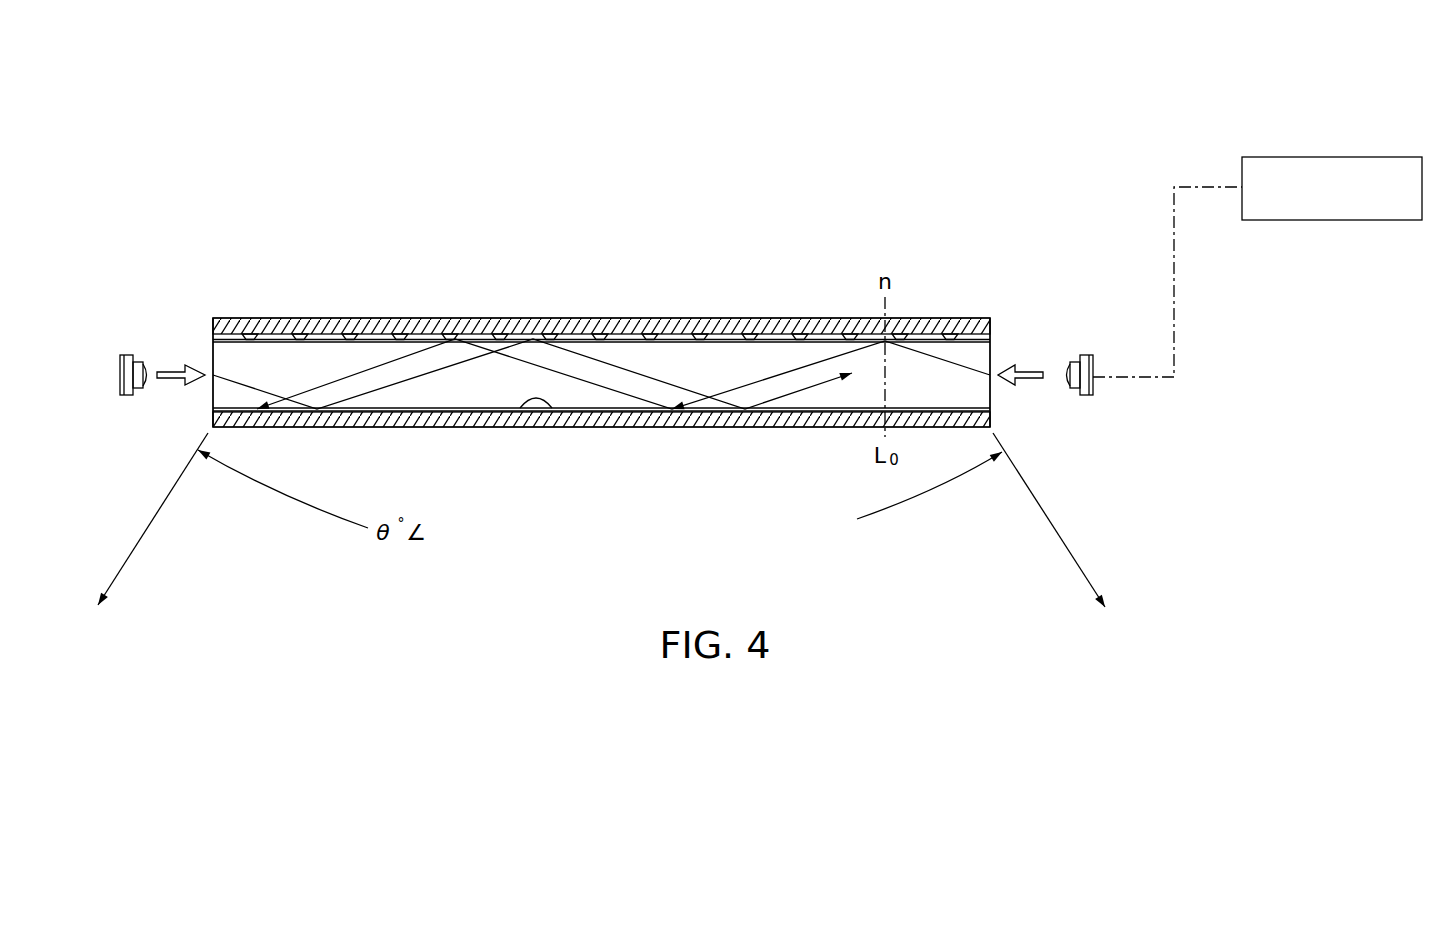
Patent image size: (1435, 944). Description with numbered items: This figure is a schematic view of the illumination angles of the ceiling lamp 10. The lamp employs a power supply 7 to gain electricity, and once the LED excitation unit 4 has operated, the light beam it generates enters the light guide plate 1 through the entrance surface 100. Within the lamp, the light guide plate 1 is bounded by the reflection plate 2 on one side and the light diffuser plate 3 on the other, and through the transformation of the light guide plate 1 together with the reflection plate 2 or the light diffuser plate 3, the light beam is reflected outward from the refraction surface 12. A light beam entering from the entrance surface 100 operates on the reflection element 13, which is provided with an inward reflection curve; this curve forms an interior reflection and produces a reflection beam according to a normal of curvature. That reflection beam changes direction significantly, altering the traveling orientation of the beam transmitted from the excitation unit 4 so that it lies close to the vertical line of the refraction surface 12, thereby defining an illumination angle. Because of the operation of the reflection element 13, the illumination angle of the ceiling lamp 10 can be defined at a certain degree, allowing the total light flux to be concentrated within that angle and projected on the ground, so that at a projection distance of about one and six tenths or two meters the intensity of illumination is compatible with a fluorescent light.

The light guide plate 1 is at (725, 358).
The reflection plate 2 is at (362, 325).
The light diffuser plate 3 is at (733, 413).
The excitation unit 4 is at (140, 357).
The power supply 7 is at (1330, 170).
The ceiling lamp 10 is at (552, 292).
The refraction surface 12 is at (550, 410).
The reflection element 13 is at (450, 337).
The entrance surface 100 is at (212, 352).